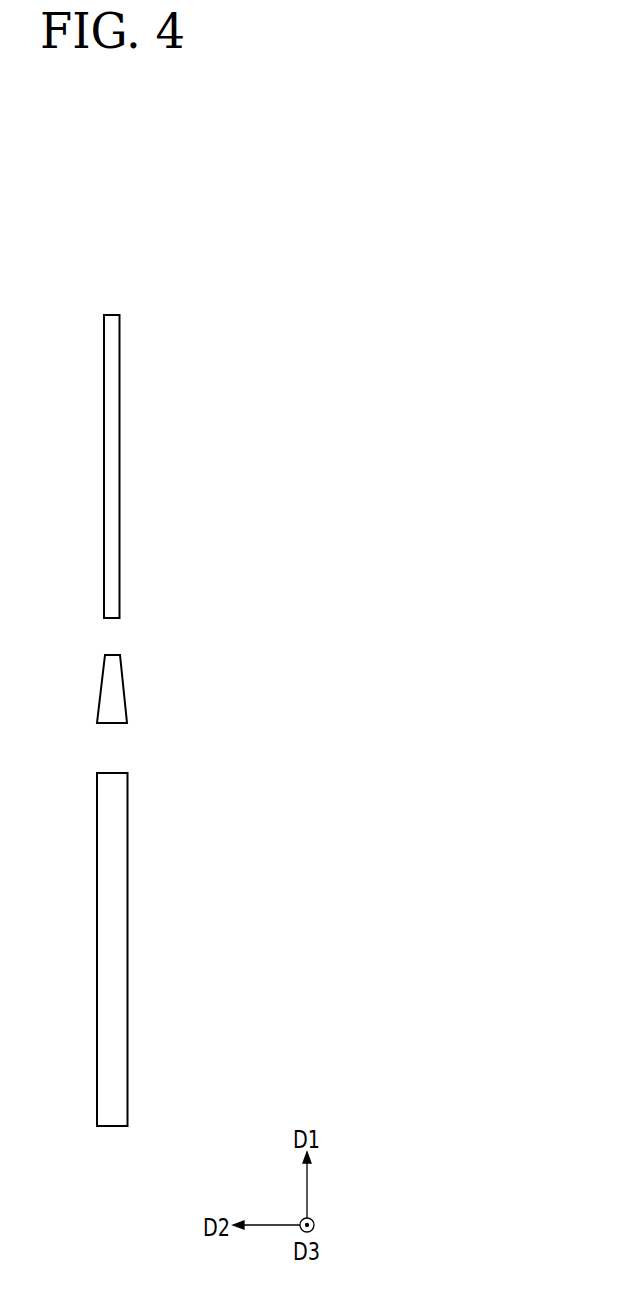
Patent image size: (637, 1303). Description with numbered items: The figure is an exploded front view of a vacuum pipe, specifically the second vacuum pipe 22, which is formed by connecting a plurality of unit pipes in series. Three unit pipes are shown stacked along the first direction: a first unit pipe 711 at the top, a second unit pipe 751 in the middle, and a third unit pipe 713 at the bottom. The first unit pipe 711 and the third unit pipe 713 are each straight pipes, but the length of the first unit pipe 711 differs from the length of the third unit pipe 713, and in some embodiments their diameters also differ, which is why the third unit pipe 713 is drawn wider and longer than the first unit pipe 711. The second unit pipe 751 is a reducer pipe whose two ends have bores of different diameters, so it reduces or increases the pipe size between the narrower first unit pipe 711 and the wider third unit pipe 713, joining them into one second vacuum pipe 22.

The second vacuum pipe 22 is at (258, 278).
The first unit pipe 711 is at (110, 463).
The second unit pipe 751 is at (113, 692).
The third unit pipe 713 is at (115, 948).